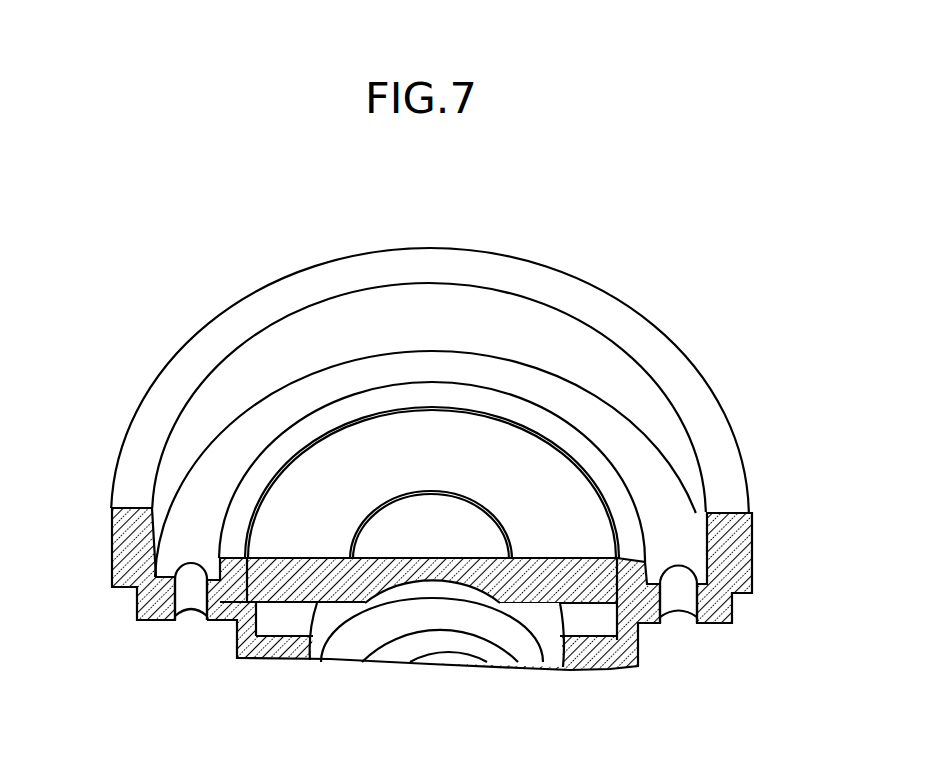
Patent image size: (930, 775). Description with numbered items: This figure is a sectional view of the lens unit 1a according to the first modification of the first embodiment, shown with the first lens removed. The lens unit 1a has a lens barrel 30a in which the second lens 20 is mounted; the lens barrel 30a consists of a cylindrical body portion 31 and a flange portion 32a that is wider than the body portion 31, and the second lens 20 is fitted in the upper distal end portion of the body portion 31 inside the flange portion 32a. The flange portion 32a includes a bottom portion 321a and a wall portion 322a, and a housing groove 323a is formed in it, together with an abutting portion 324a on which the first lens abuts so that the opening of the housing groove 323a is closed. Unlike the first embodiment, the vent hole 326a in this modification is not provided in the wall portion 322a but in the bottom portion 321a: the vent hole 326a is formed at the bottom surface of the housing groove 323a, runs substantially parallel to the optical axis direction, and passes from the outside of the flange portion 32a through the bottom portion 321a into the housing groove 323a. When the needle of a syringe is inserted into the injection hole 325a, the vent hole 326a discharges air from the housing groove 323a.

The lens unit 1a is at (659, 234).
The second lens 20 is at (345, 462).
The lens barrel 30a is at (101, 430).
The body portion 31 is at (252, 655).
The flange portion 32a is at (103, 526).
The bottom portion 321a is at (137, 612).
The wall portion 322a is at (112, 563).
The housing groove 323a is at (210, 490).
The abutting portion 324a is at (497, 398).
The injection hole 325a is at (189, 591).
The vent hole 326a is at (677, 597).